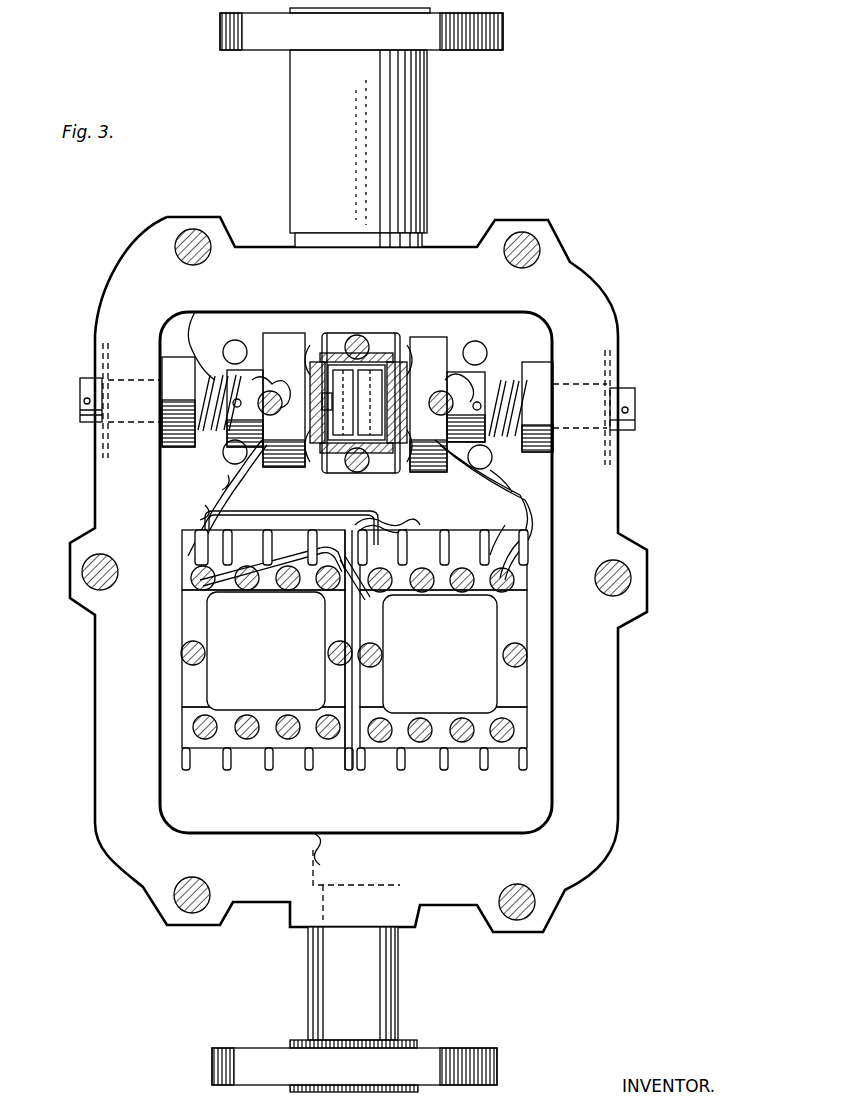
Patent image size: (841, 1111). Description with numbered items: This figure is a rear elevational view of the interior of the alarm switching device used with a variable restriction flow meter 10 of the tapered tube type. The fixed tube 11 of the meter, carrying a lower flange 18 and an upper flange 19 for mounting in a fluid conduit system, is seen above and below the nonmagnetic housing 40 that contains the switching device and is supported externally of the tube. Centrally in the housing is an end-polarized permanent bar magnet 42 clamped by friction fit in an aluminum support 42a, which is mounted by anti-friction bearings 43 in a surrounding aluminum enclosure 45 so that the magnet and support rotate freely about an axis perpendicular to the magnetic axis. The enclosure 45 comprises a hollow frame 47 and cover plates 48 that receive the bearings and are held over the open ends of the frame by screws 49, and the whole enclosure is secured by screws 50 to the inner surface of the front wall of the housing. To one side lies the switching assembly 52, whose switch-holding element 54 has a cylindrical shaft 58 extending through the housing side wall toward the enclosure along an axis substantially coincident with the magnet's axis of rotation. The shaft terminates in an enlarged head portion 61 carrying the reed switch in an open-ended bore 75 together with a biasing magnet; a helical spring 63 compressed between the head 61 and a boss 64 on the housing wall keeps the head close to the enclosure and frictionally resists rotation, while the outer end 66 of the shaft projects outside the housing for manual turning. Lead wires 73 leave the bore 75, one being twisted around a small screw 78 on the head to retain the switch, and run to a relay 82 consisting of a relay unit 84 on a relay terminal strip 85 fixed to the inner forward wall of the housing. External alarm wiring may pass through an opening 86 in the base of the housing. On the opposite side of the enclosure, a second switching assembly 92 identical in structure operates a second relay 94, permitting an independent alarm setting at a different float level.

The variable restriction flow meter 10 is at (382, 148).
The fixed tube 11 is at (418, 193).
The lower flange 18 is at (440, 1060).
The upper flange 19 is at (497, 42).
The housing 40 is at (103, 728).
The permanent bar magnet 42 is at (360, 440).
The aluminum support 42a is at (368, 400).
The anti-friction bearings 43 is at (312, 360).
The aluminum enclosure 45 is at (385, 345).
The hollow frame 47 is at (348, 470).
The cover plates 48 is at (325, 455).
The screws 49 is at (305, 462).
The screws 50 is at (355, 345).
The switching assembly 52 is at (220, 354).
The switch-holding element 54 is at (92, 380).
The cylindrical shaft 58 is at (210, 445).
The enlarged head portion 61 is at (298, 395).
The helical spring 63 is at (195, 312).
The boss 64 is at (175, 345).
The outer end of shaft 66 is at (80, 398).
The lead wires 73 is at (268, 460).
The open-ended bore 75 is at (290, 395).
The small screw 78 is at (265, 385).
The relay 82 is at (239, 650).
The relay unit 84 is at (275, 656).
The relay terminal strip 85 is at (307, 750).
The opening 86 is at (313, 853).
The second switching assembly 92 is at (523, 366).
The second relay 94 is at (455, 659).